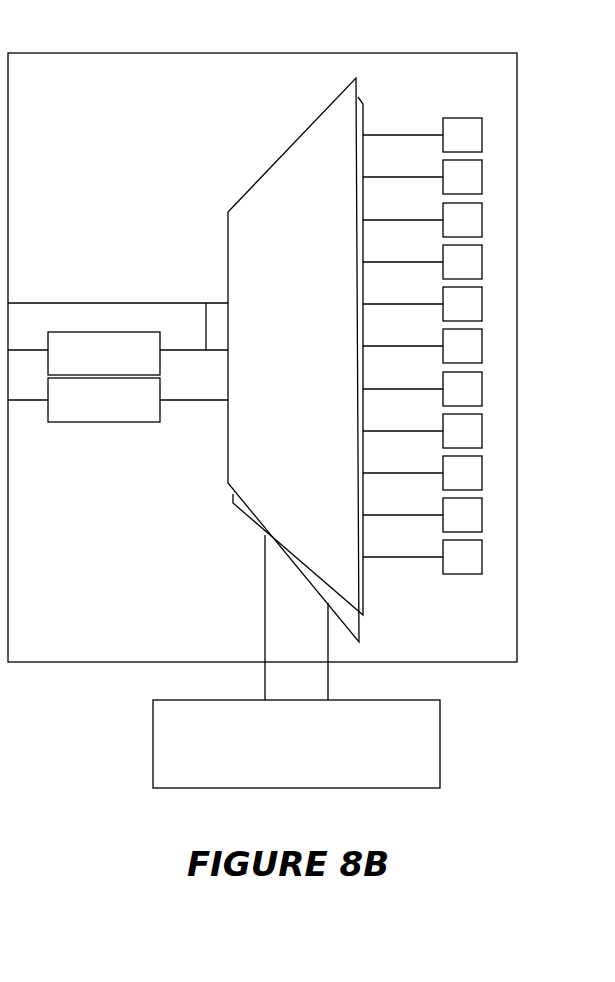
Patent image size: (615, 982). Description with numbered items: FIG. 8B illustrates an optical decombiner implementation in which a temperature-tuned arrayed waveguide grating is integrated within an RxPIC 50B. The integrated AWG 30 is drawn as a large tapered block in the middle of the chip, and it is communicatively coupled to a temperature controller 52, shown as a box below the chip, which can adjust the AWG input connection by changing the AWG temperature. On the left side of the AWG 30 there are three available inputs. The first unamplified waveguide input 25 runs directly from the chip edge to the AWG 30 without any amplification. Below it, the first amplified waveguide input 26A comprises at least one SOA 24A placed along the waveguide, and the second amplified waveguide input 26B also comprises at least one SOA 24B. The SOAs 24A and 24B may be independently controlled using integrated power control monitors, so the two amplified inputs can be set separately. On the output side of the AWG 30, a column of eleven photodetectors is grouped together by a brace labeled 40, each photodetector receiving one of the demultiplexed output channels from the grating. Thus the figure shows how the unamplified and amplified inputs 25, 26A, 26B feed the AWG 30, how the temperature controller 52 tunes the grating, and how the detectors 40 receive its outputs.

The RxPIC 50B is at (262, 357).
The first unamplified waveguide input 25 is at (45, 303).
The first amplified waveguide input 26A is at (206, 303).
The second amplified waveguide input 26B is at (197, 402).
The SOA 24A is at (84, 353).
The SOA 24B is at (84, 400).
The AWG 30 is at (295, 360).
The photodetector (PD) array 40 is at (498, 115).
The temperature controller 52 is at (296, 661).